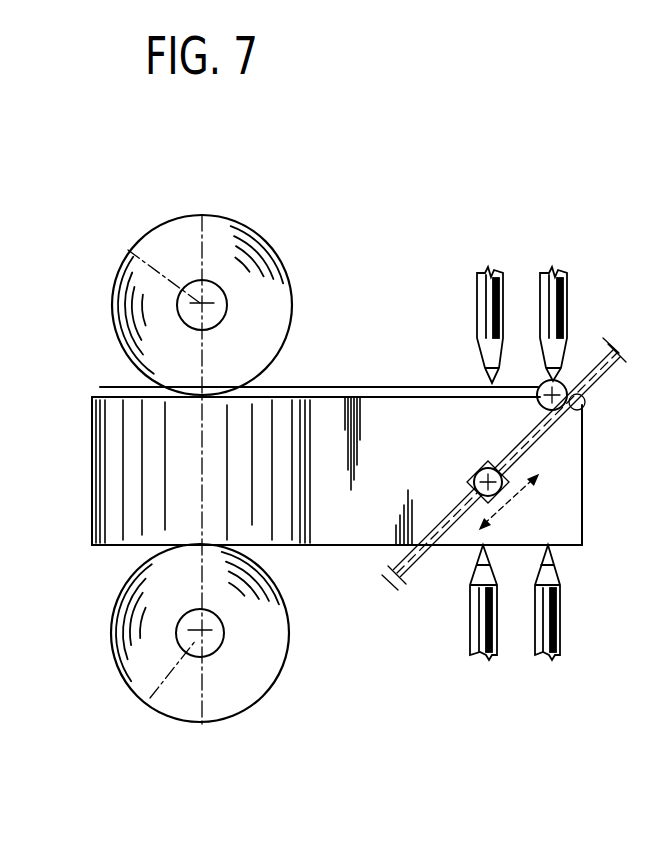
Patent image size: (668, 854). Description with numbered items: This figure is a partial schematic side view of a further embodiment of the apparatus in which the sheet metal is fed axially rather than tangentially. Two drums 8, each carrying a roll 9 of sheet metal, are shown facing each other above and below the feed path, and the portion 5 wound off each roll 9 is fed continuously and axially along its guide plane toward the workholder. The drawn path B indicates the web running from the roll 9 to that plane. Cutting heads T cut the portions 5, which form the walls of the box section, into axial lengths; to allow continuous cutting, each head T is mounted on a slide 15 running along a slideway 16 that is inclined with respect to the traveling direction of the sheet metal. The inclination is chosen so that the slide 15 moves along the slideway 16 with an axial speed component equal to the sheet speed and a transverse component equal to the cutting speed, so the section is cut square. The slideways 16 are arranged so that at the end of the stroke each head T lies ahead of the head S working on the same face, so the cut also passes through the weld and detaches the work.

The portion 5 is at (590, 410).
The drum 8 is at (215, 316).
The roll 9 is at (201, 228).
The slide 15 is at (468, 483).
The slideway 16 is at (560, 438).
The web / bobbin B is at (128, 250).
The head T is at (478, 297).
The head S is at (565, 298).